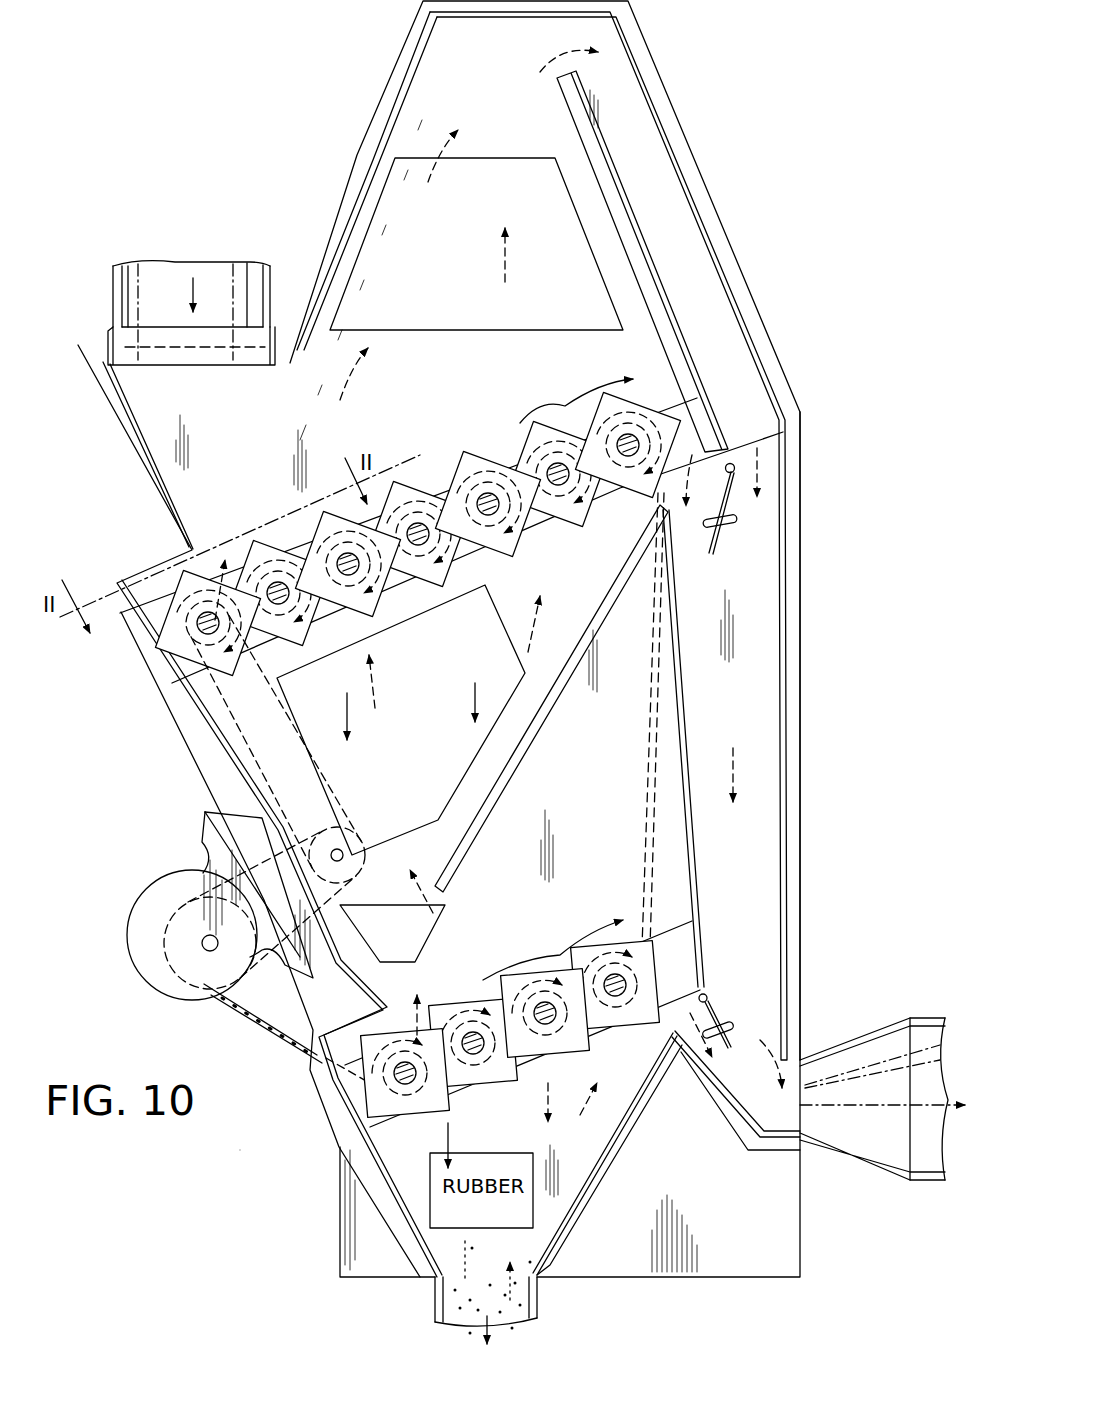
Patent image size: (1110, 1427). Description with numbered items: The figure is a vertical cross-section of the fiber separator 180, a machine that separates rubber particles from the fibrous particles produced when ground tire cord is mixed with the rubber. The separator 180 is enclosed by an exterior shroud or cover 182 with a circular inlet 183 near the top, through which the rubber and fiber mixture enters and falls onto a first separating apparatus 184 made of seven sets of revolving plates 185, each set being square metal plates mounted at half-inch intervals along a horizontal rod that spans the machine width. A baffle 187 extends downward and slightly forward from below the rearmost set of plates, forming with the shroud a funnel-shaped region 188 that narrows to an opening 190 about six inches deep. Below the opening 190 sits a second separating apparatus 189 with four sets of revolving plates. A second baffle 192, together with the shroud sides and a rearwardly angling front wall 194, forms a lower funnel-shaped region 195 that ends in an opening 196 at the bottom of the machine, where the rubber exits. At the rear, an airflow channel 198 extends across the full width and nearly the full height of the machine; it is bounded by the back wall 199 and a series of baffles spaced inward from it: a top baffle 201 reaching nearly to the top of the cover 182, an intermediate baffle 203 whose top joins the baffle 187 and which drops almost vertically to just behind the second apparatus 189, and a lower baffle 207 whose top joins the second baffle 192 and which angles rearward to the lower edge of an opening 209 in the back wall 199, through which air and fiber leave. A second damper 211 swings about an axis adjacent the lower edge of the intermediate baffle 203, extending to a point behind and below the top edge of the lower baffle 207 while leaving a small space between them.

The fiber separator 180 is at (822, 563).
The exterior shroud or cover 182 is at (356, 188).
The inlet 183 is at (128, 297).
The first separating apparatus 184 is at (287, 533).
The revolving plates 185 is at (515, 445).
The baffle 187 is at (540, 758).
The funnel-shaped region 188 is at (327, 742).
The second separating apparatus 189 is at (462, 994).
The opening 190 is at (420, 942).
The second baffle 192 is at (596, 1180).
The front wall 194 is at (398, 1236).
The funnel-shaped region 195 is at (550, 1212).
The opening 196 is at (540, 1292).
The airflow channel 198 is at (700, 258).
The back wall 199 is at (792, 511).
The top baffle 201 is at (612, 200).
The intermediate baffle 203 is at (665, 712).
The lower baffle 207 is at (732, 1115).
The opening 209 is at (800, 1065).
The second damper 211 is at (707, 997).